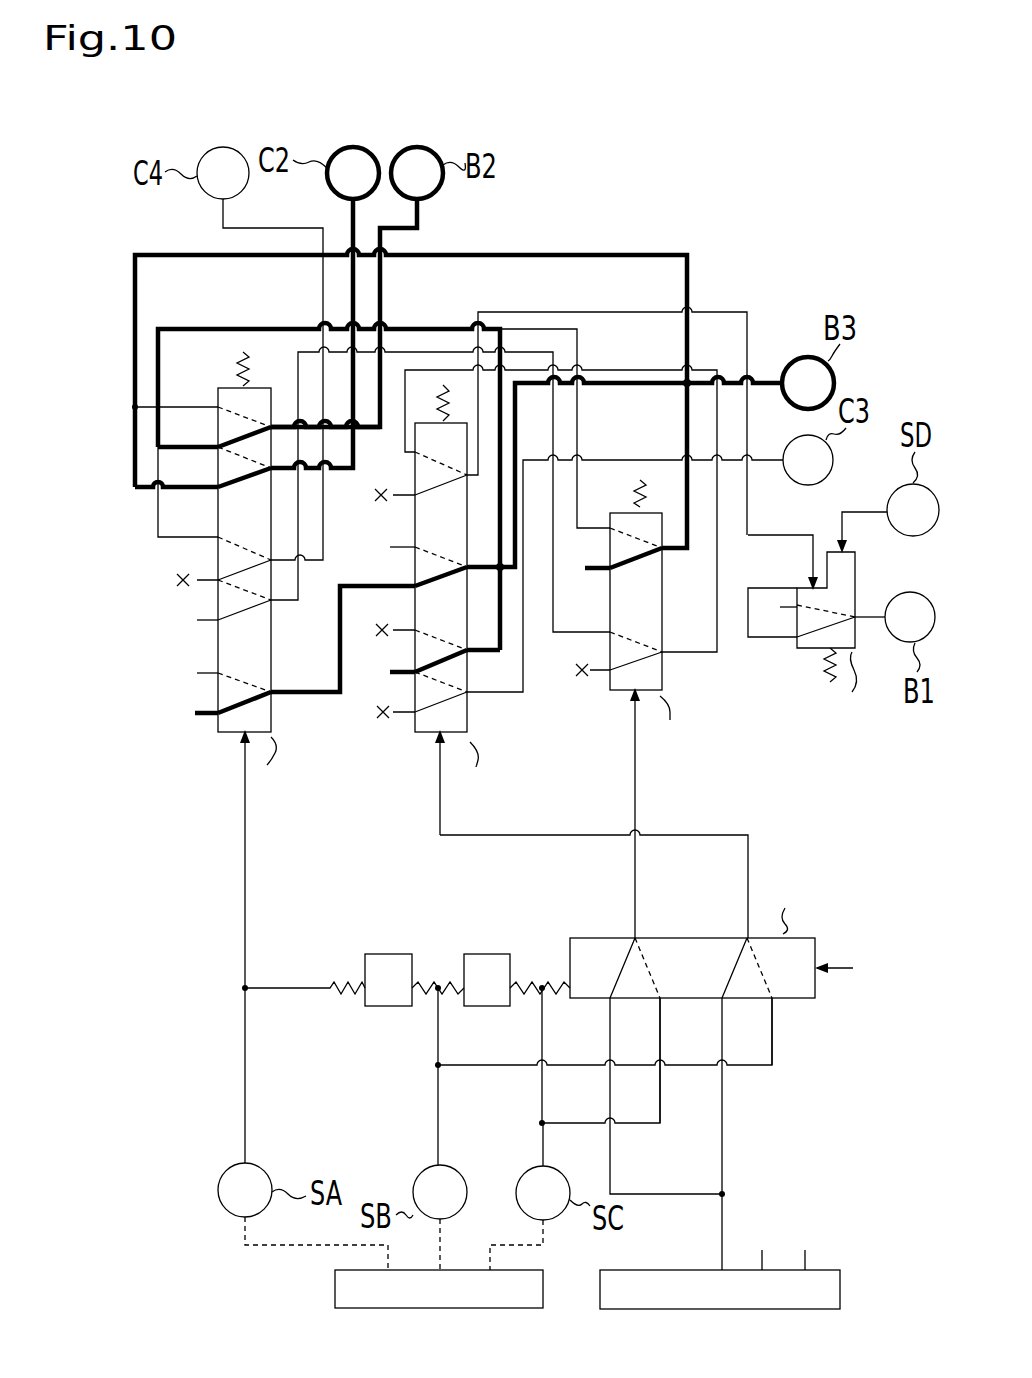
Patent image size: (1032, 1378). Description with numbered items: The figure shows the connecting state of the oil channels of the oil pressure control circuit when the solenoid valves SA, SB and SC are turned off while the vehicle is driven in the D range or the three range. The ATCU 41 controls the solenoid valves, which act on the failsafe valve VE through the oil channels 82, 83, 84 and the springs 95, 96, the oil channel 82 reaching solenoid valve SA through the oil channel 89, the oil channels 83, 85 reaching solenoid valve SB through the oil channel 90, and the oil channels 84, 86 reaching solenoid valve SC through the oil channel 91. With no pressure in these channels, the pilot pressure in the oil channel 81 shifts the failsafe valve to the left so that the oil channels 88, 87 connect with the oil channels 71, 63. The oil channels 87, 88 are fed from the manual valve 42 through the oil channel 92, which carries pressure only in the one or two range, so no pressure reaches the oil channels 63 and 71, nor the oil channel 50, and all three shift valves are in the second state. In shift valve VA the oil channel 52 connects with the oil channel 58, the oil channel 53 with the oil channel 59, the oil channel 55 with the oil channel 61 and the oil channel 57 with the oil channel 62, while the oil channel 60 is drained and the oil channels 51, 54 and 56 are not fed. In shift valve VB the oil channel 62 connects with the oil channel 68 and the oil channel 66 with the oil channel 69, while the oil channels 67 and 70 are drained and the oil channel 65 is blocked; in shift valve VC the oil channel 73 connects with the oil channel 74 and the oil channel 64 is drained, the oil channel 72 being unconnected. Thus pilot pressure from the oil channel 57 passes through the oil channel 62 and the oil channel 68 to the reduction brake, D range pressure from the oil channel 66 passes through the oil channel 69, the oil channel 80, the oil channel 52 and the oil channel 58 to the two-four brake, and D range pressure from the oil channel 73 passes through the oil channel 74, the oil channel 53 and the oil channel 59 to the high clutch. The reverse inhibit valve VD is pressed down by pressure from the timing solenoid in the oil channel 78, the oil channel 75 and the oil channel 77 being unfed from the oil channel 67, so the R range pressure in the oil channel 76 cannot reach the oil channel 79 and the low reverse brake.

The ATCU 41 is at (335, 1290).
The manual valve 42 is at (841, 1290).
The oil channel 50 is at (243, 800).
The oil channel 51 is at (183, 404).
The oil channel 52 is at (188, 430).
The oil channel 53 is at (176, 492).
The oil channel 54 is at (178, 540).
The oil channel 55 is at (200, 610).
The oil channel 56 is at (206, 673).
The oil channel 57 is at (204, 716).
The oil channel 58 is at (420, 222).
The oil channel 59 is at (351, 212).
The oil channel 60 is at (222, 213).
The oil channel 61 is at (284, 600).
The oil channel 62 is at (302, 698).
The oil channel 63 is at (438, 798).
The oil channel 64 is at (400, 427).
The oil channel 65 is at (394, 550).
The oil channel 66 is at (398, 680).
The oil channel 67 is at (726, 312).
The oil channel 68 is at (604, 388).
The oil channel 69 is at (500, 634).
The oil channel 70 is at (498, 694).
The oil channel 71 is at (637, 778).
The oil channel 72 is at (582, 526).
The oil channel 73 is at (594, 576).
The oil channel 74 is at (600, 254).
The oil channel 75 is at (760, 534).
The oil channel 76 is at (780, 602).
The oil channel 77 is at (784, 642).
The oil channel 78 is at (862, 510).
The oil channel 79 is at (872, 612).
The oil channel 80 is at (416, 325).
The oil channel 81 is at (843, 960).
The oil channel 82 is at (287, 992).
The oil channel 83 is at (437, 1033).
The oil channel 84 is at (540, 1035).
The oil channel 85 is at (774, 1028).
The oil channel 86 is at (661, 1030).
The oil channel 87 is at (723, 1178).
The oil channel 88 is at (612, 1178).
The oil channel 89 is at (247, 1113).
The oil channel 90 is at (441, 1113).
The oil channel 91 is at (546, 1150).
The oil channel 92 is at (720, 1237).
The spring 95 is at (440, 959).
The spring 96 is at (545, 959).